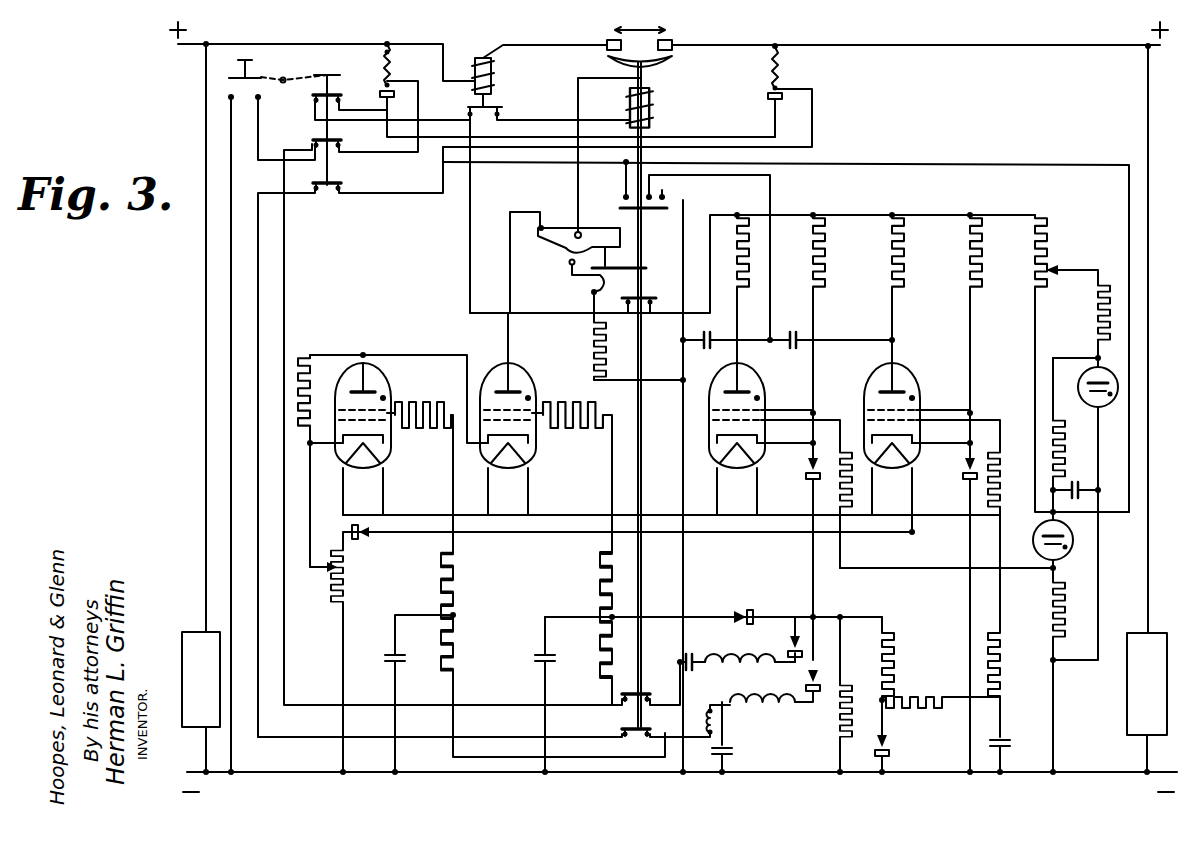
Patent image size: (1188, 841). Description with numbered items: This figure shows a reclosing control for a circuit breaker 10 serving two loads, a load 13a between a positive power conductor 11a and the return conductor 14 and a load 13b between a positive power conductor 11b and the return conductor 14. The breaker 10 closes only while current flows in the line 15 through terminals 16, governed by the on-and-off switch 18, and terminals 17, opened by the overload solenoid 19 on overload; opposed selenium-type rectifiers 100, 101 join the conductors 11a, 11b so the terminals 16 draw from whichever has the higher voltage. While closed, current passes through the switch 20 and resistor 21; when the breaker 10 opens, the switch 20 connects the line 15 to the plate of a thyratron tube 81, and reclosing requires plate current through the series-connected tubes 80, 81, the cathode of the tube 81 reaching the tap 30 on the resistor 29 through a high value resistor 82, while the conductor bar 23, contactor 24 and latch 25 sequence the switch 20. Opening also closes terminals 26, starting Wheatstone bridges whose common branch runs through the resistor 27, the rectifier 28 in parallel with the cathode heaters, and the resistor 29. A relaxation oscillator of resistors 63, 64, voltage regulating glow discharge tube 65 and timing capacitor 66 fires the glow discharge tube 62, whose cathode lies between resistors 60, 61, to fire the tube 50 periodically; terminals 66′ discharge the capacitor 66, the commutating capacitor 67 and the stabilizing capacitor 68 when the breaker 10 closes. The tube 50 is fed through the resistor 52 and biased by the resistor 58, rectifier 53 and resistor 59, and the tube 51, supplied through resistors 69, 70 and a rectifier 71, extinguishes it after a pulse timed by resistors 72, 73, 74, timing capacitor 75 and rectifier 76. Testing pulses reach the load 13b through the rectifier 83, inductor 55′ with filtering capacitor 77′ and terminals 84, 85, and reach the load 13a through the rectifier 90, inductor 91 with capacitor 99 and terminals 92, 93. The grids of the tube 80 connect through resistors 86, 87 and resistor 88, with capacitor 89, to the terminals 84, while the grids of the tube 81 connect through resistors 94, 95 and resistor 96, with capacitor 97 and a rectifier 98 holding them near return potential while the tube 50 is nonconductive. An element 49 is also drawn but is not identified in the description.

The circuit breaker 10 is at (665, 61).
The positive power conductor 11a is at (291, 45).
The positive power conductor 11b is at (916, 34).
The load 13a is at (198, 640).
The load 13b is at (1140, 690).
The return conductor 14 is at (775, 774).
The line 15 is at (578, 99).
The terminals 16 is at (314, 102).
The terminals 17 is at (499, 116).
The on-and-off switch 18 is at (285, 79).
The overload solenoid 19 is at (492, 76).
The switch 20 is at (619, 208).
The resistor 21 is at (590, 352).
The conductor bar 23 is at (641, 267).
The contactor 24 is at (569, 263).
The latch 25 is at (572, 277).
The terminals 26 is at (651, 311).
The resistor 27 is at (1050, 249).
The selenium-type rectifier 28 is at (362, 540).
The resistor 29 is at (352, 587).
The intermediate point 30 is at (310, 568).
The conductor 49 is at (231, 96).
The tube 50 is at (757, 381).
The tube 51 is at (909, 382).
The resistor 52 is at (752, 254).
The rectifier 53 is at (805, 478).
The inductor 55′ is at (760, 705).
The resistor 58 is at (826, 272).
The resistor 59 is at (836, 736).
The resistor 60 is at (852, 491).
The resistor 61 is at (1066, 601).
The glow discharge tube 62 is at (1073, 541).
The resistor 63 is at (1097, 293).
The timing resistor 64 is at (1046, 432).
The voltage regulating glow discharge tube 65 is at (1078, 387).
The timing capacitor 66 is at (1075, 482).
The terminals 66′ is at (670, 192).
The commutating capacitor 67 is at (792, 331).
The stabilizing capacitor 68 is at (705, 352).
The resistor 69 is at (906, 256).
The resistor 70 is at (984, 256).
The selenium-type rectifier 71 is at (962, 478).
The resistor 72 is at (1003, 661).
The resistor 73 is at (936, 697).
The resistor 74 is at (897, 661).
The timing capacitor 75 is at (1005, 755).
The selenium-type rectifier 76 is at (888, 748).
The capacitor 77′ is at (734, 751).
The thyratron tube 80 is at (380, 366).
The thyratron tube 81 is at (531, 381).
The high value resistor 82 is at (310, 356).
The rectifier 83 is at (806, 683).
The terminals 84 is at (622, 731).
The terminals 85 is at (333, 191).
The resistor 86 is at (400, 410).
The resistor 87 is at (410, 428).
The resistor 88 is at (463, 589).
The capacitor 89 is at (391, 655).
The rectifier 90 is at (789, 648).
The inductor 91 is at (740, 660).
The terminals 92 is at (652, 694).
The terminals 93 is at (314, 144).
The resistor 94 is at (549, 410).
The resistor 95 is at (576, 428).
The resistor 96 is at (604, 562).
The capacitor 97 is at (535, 664).
The selenium-type rectifier 98 is at (738, 613).
The capacitor 99 is at (683, 657).
The selenium-type rectifier 100 is at (381, 93).
The selenium-type rectifier 101 is at (767, 95).